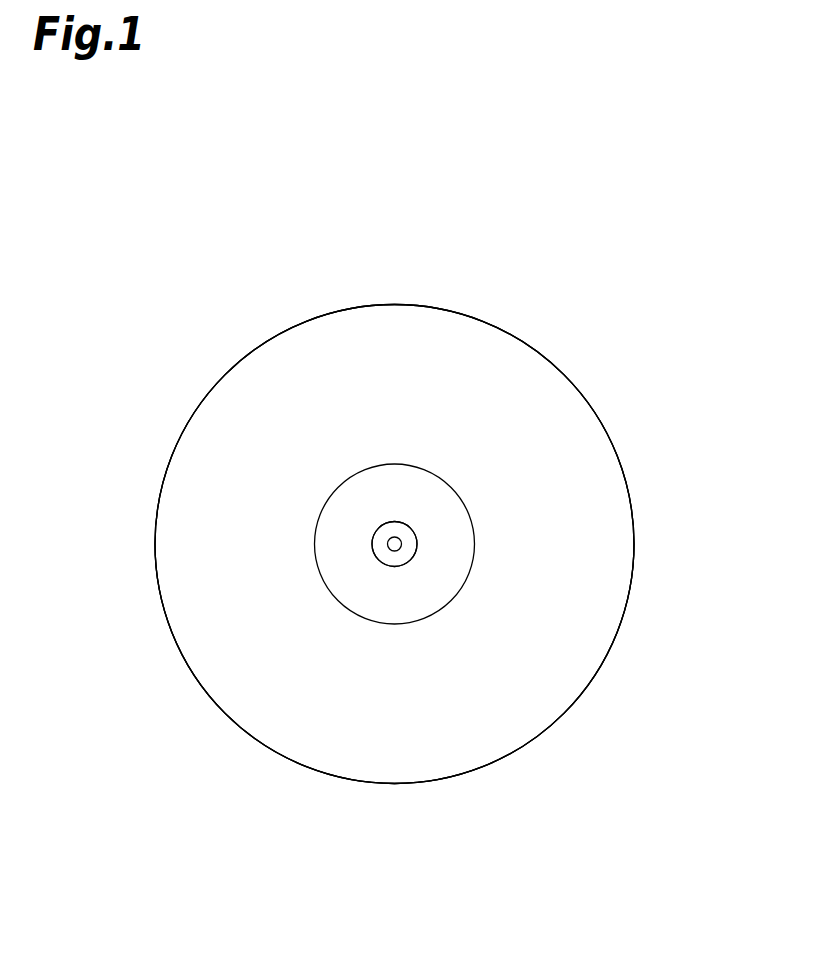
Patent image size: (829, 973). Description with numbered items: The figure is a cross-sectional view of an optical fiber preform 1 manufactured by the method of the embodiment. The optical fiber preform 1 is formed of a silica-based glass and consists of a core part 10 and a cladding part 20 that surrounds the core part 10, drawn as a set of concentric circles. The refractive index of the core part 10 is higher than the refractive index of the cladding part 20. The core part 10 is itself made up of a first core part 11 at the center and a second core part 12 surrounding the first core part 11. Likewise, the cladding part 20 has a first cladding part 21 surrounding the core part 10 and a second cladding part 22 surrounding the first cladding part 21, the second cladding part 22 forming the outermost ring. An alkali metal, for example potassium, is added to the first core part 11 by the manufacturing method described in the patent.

The optical fiber preform 1 is at (627, 233).
The core part 10 is at (687, 336).
The first core part 11 is at (402, 543).
The second core part 12 is at (410, 559).
The cladding part 20 is at (688, 678).
The first cladding part 21 is at (445, 587).
The second cladding part 22 is at (523, 717).